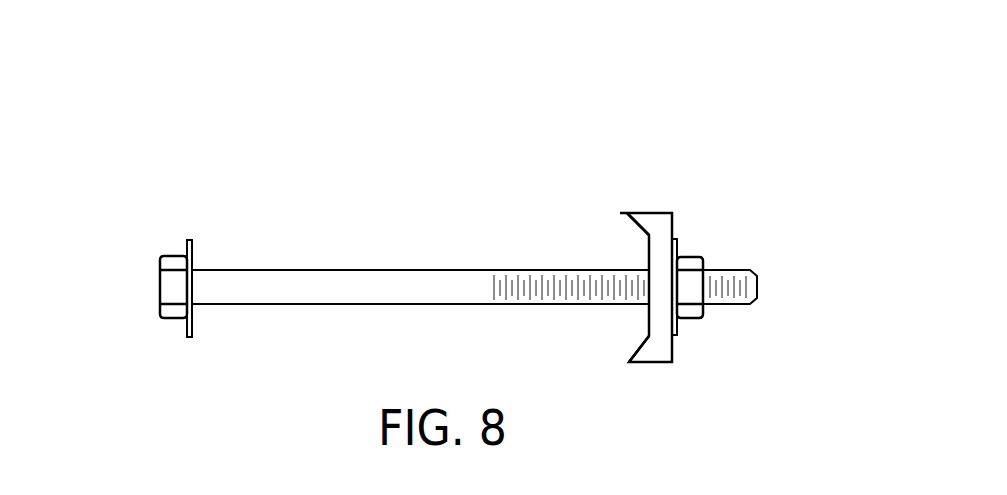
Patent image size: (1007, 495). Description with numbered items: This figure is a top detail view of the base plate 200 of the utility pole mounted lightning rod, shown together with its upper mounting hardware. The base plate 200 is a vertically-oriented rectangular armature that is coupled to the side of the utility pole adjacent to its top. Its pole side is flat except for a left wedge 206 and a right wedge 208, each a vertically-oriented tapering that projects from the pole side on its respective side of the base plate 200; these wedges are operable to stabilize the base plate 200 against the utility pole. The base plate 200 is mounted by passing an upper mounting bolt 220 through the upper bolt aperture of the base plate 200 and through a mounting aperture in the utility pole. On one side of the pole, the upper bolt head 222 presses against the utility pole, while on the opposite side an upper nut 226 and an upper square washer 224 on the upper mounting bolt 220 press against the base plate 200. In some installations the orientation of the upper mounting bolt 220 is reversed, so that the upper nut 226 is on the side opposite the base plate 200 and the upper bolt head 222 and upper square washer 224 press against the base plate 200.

The base plate 200 is at (658, 222).
The left wedge 206 is at (628, 365).
The right wedge 208 is at (627, 213).
The upper mounting bolt 220 is at (341, 282).
The upper bolt head 222 is at (167, 292).
The upper square washer 224 is at (678, 335).
The upper nut 226 is at (700, 316).